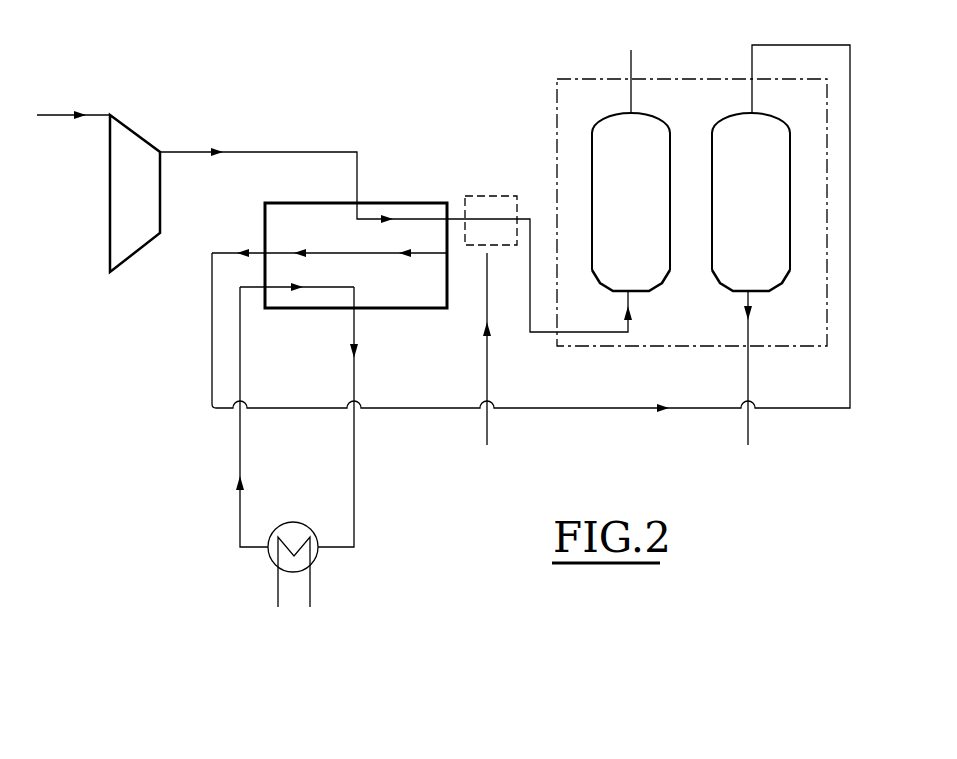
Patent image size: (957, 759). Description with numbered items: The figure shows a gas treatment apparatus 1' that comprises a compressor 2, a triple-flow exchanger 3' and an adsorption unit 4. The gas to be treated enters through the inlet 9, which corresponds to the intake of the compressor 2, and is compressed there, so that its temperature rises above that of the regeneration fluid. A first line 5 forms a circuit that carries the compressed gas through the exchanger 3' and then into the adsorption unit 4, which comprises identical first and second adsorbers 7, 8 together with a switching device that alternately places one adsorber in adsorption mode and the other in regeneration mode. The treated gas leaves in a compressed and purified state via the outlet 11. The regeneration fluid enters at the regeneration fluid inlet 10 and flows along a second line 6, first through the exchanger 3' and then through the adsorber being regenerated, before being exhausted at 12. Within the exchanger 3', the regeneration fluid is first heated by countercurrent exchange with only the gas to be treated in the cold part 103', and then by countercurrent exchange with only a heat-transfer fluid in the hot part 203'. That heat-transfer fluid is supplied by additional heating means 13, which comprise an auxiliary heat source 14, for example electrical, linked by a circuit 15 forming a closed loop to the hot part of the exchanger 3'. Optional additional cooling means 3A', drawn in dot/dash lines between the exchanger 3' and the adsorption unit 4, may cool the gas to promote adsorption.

The gas treatment apparatus 1' is at (390, 95).
The compressor 2 is at (110, 228).
The triple-flow exchanger 3' is at (356, 231).
The additional cooling means 3A' is at (491, 194).
The adsorption unit 4 is at (557, 130).
The first line 5 is at (318, 152).
The second line 6 is at (487, 273).
The first adsorber 7 is at (640, 291).
The second adsorber 8 is at (763, 291).
The inlet for the gas to be treated 9 is at (52, 115).
The regeneration fluid inlet 10 is at (487, 430).
The outlet for the treated gas 11 is at (631, 92).
The regenerating gas exhaust 12 is at (748, 422).
The additional heating means 13 is at (230, 492).
The auxiliary heat source 14 is at (312, 560).
The circuit 15 is at (354, 515).
The cold part of the exchanger 103' is at (329, 300).
The hot part of the exchanger 203' is at (297, 328).